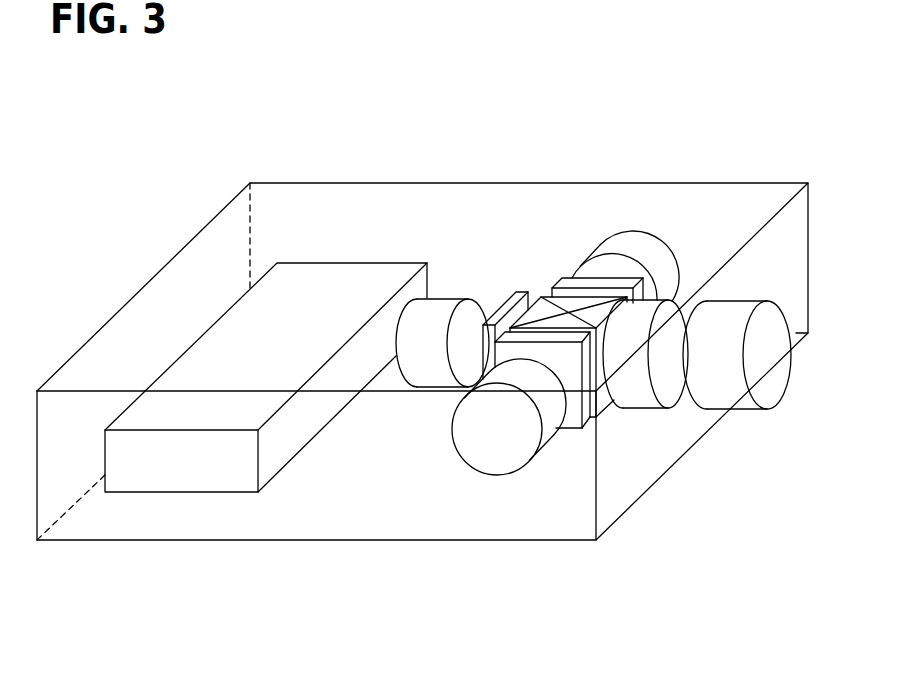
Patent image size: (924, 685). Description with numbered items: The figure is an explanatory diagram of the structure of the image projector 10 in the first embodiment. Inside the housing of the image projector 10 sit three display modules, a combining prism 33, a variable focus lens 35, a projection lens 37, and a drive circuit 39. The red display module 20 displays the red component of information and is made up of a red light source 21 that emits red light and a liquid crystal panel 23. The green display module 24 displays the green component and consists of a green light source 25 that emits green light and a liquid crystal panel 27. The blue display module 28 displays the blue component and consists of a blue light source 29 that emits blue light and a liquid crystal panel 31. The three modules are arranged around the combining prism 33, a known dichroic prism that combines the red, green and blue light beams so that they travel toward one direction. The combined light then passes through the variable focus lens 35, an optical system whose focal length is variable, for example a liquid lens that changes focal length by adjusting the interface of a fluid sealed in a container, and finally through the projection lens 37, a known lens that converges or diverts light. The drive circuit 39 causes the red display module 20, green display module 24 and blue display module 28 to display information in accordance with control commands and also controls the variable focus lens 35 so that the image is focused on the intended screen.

The image projector 10 is at (249, 167).
The red display module 20 is at (657, 106).
The red light source 21 is at (628, 250).
The liquid crystal panel 23 is at (571, 283).
The green display module 24 is at (383, 106).
The green light source 25 is at (422, 315).
The liquid crystal panel 27 is at (503, 302).
The blue display module 28 is at (443, 620).
The blue light source 29 is at (502, 442).
The liquid crystal panel 31 is at (575, 412).
The combining prism 33 is at (542, 308).
The variable focus lens 35 is at (633, 390).
The projection lens 37 is at (773, 395).
The drive circuit 39 is at (255, 318).